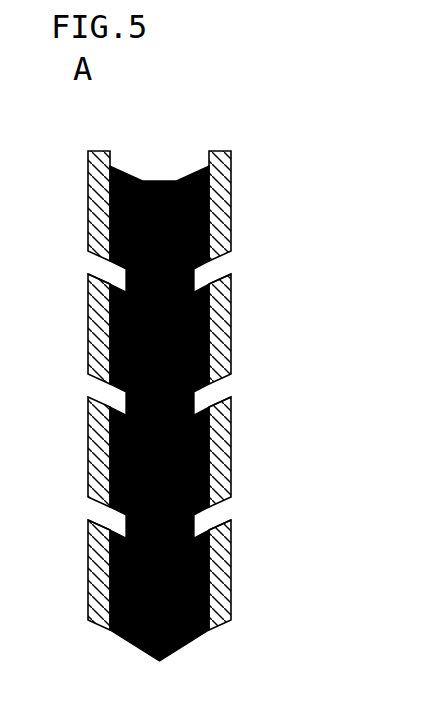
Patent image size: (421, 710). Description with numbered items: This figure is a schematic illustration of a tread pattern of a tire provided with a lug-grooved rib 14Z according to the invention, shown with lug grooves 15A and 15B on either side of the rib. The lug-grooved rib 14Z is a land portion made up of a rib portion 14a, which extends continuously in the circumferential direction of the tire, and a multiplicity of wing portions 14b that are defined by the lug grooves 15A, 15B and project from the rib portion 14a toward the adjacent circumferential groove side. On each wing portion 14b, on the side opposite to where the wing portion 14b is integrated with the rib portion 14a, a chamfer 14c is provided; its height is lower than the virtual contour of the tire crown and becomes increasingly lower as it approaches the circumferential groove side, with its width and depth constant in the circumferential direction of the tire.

The lug-grooved rib 14Z is at (318, 170).
The rib portion 14a is at (223, 353).
The wing portion 14b is at (223, 408).
The chamfer 14c is at (223, 438).
The lug groove 15A is at (212, 263).
The lug groove 15B is at (107, 272).